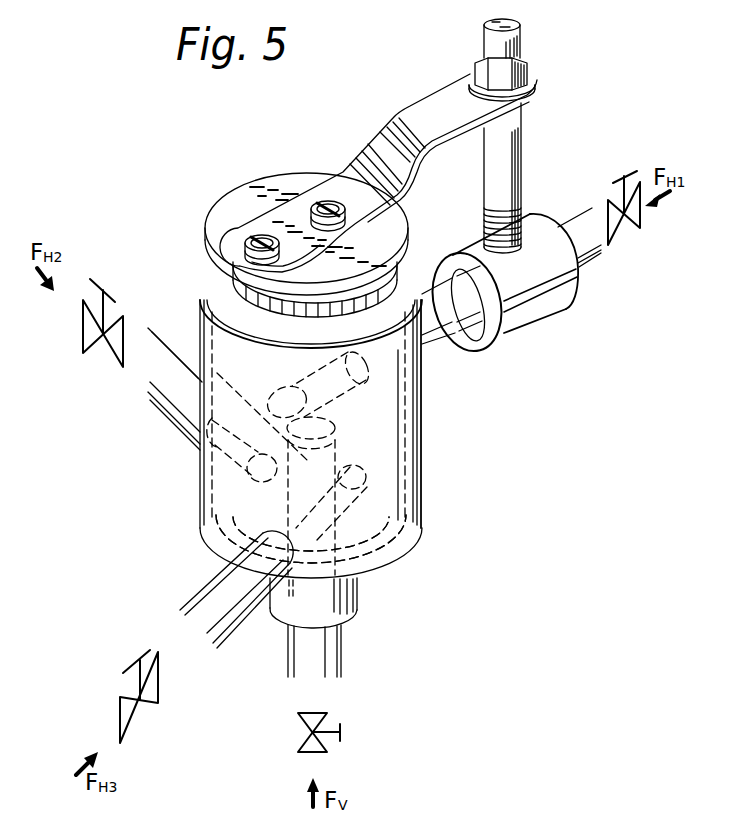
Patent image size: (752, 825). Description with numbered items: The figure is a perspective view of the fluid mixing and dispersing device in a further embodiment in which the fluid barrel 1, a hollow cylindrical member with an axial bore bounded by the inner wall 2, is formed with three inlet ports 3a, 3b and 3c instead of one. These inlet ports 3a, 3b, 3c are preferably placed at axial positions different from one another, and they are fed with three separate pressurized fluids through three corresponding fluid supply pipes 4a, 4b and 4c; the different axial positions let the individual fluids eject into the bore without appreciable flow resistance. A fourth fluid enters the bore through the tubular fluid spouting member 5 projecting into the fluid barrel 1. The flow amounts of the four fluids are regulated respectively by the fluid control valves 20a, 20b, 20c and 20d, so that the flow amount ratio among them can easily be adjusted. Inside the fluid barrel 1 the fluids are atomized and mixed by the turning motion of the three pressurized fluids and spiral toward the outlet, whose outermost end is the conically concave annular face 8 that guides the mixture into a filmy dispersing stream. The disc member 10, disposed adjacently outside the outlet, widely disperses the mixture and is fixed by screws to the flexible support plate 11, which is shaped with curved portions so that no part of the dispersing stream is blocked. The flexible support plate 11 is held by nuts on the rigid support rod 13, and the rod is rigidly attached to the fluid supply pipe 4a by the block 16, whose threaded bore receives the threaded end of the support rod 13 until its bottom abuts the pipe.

The fluid barrel 1 is at (420, 506).
The inner wall 2 is at (395, 403).
The inlet port 3a is at (409, 451).
The inlet port 3b is at (206, 512).
The inlet port 3c is at (387, 563).
The fluid supply pipe 4a is at (445, 345).
The fluid supply pipe 4b is at (173, 427).
The fluid supply pipe 4c is at (240, 618).
The tubular fluid spouting member 5 is at (338, 654).
The conically concave annular face 8 is at (200, 283).
The disc member 10 is at (238, 197).
The flexible support plate 11 is at (403, 117).
The rigid support rod 13 is at (522, 168).
The block 16 is at (538, 320).
The fluid control valve 20a is at (617, 247).
The fluid control valve 20b is at (112, 361).
The fluid control valve 20c is at (140, 722).
The fluid control valve 20d is at (335, 723).